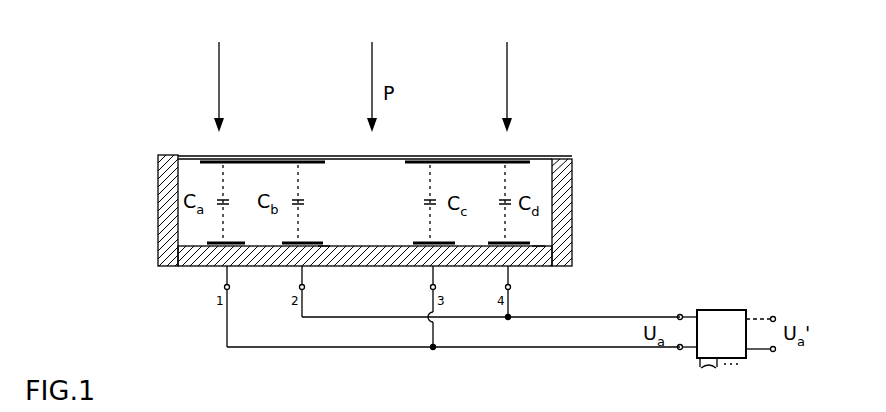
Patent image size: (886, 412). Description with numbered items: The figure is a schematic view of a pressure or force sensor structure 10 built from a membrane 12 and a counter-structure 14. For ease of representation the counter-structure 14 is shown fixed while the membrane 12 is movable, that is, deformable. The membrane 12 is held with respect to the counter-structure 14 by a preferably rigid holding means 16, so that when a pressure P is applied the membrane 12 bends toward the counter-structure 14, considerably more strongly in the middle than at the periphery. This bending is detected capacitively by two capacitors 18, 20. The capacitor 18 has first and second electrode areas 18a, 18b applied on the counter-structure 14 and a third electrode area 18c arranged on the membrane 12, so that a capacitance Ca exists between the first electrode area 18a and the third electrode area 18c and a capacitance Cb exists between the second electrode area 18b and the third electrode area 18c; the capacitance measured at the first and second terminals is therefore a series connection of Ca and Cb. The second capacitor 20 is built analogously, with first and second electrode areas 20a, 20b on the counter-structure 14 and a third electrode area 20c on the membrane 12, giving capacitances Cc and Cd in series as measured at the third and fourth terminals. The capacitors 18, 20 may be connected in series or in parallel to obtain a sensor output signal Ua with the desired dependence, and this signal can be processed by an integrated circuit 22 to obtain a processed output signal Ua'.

The pressure or force sensor structure 10 is at (544, 128).
The membrane 12 is at (528, 157).
The counter-structure 14 is at (545, 270).
The holding means 16 is at (158, 208).
The capacitor 18 is at (270, 246).
The first electrode area 18a is at (213, 248).
The second electrode area 18b is at (322, 247).
The third electrode area 18c is at (255, 160).
The second capacitor 20 is at (448, 228).
The first electrode area 20a is at (460, 247).
The second electrode area 20b is at (536, 247).
The third electrode area 20c is at (458, 160).
The integrated circuit 22 is at (719, 310).